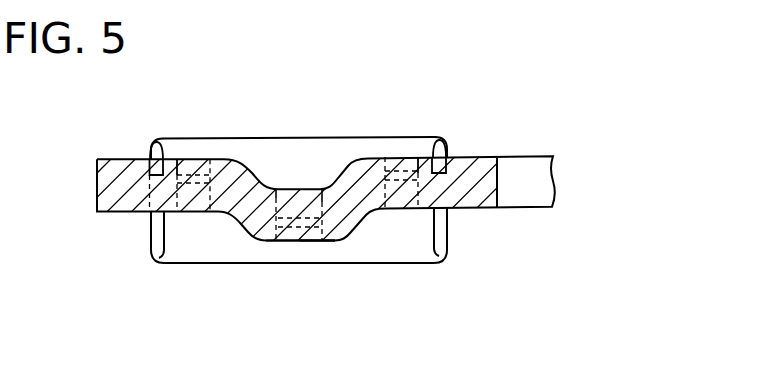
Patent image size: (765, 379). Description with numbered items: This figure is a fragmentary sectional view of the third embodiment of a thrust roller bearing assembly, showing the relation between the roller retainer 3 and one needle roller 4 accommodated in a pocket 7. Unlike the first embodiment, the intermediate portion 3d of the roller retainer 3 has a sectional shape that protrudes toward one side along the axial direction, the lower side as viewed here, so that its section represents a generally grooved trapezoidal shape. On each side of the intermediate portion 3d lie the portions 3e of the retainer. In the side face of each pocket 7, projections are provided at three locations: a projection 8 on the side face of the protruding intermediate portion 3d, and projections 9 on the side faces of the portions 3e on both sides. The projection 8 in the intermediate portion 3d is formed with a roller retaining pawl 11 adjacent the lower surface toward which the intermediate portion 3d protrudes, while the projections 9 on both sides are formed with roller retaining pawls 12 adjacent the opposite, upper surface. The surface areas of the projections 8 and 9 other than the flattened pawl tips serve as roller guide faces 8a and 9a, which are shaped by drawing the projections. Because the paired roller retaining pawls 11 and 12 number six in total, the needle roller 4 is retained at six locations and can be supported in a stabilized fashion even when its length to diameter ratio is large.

The roller retainer 3 is at (110, 159).
The intermediate portion 3d is at (338, 238).
The side portions 3e is at (151, 144).
The needle roller 4 is at (318, 155).
The pocket 7 is at (143, 237).
The projection 8 is at (291, 241).
The roller guide face 8a is at (293, 188).
The projection 9 is at (191, 212).
The roller guide face 9a is at (202, 213).
The roller retaining pawl 11 is at (310, 248).
The roller retaining pawl 12 is at (200, 158).